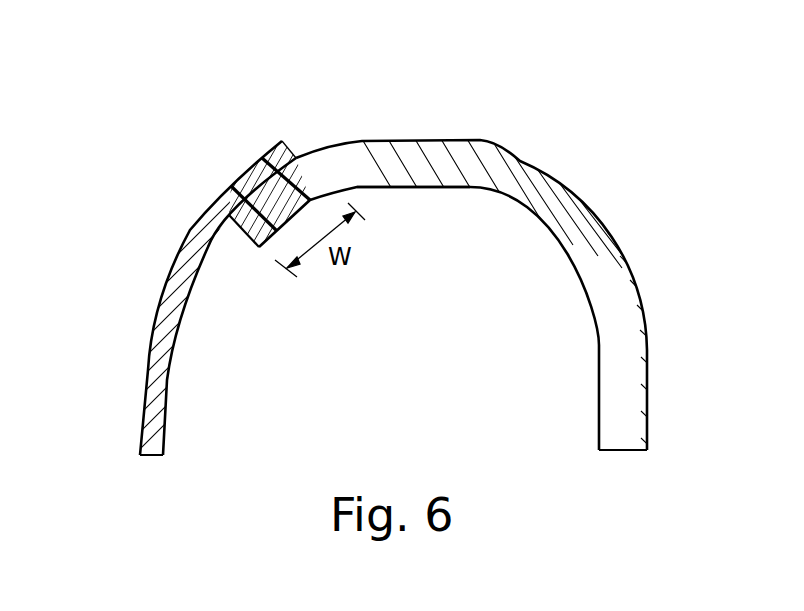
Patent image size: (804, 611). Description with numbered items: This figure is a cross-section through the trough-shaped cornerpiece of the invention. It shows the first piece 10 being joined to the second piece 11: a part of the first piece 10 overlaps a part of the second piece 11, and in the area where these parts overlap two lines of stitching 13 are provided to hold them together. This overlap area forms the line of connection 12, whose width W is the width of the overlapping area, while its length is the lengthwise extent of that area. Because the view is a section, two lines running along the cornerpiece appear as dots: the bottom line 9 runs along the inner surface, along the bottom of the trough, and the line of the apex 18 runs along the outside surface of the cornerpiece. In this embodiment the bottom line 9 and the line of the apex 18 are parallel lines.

The bottom line 9 is at (416, 188).
The first piece 10 is at (160, 333).
The second piece 11 is at (550, 182).
The line of connection 12 is at (238, 154).
The lines of stitching 13 is at (263, 156).
The line of the apex 18 is at (416, 140).